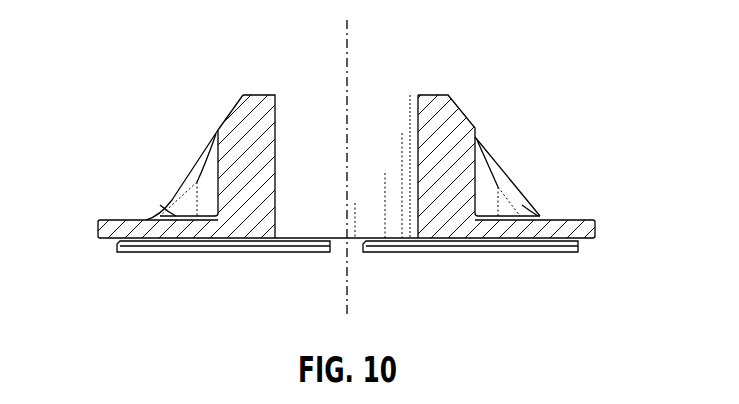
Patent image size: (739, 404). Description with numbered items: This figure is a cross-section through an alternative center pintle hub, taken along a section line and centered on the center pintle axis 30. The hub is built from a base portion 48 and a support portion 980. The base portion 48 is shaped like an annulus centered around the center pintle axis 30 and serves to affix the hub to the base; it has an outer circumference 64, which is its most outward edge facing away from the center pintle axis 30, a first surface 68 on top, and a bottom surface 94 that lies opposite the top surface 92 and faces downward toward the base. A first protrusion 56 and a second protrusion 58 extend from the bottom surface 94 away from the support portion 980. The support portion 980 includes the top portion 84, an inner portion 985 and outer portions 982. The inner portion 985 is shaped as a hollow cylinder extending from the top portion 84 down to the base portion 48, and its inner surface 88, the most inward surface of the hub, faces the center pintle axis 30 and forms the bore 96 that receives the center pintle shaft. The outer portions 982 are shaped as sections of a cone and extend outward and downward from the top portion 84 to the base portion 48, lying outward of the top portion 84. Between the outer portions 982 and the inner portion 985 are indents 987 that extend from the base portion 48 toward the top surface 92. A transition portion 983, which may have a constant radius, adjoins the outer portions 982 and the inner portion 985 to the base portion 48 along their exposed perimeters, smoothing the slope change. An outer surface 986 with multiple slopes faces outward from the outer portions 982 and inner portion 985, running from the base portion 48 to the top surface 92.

The center pintle axis 30 is at (350, 46).
The top portion 84 is at (457, 107).
The inner surface 88 is at (295, 108).
The bore 96 is at (388, 108).
The top surface 92 is at (435, 108).
The inner portion 985 is at (427, 168).
The support portion 980 is at (240, 166).
The outer portions 982 is at (183, 197).
The outer surface 986 is at (473, 132).
The indents 987 is at (484, 183).
The transition portion 983 is at (535, 218).
The first surface 68 is at (588, 219).
The outer circumference 64 is at (597, 230).
The first protrusion 56 is at (235, 253).
The second protrusion 58 is at (455, 253).
The bottom surface 94 is at (533, 247).
The base portion 48 is at (583, 241).